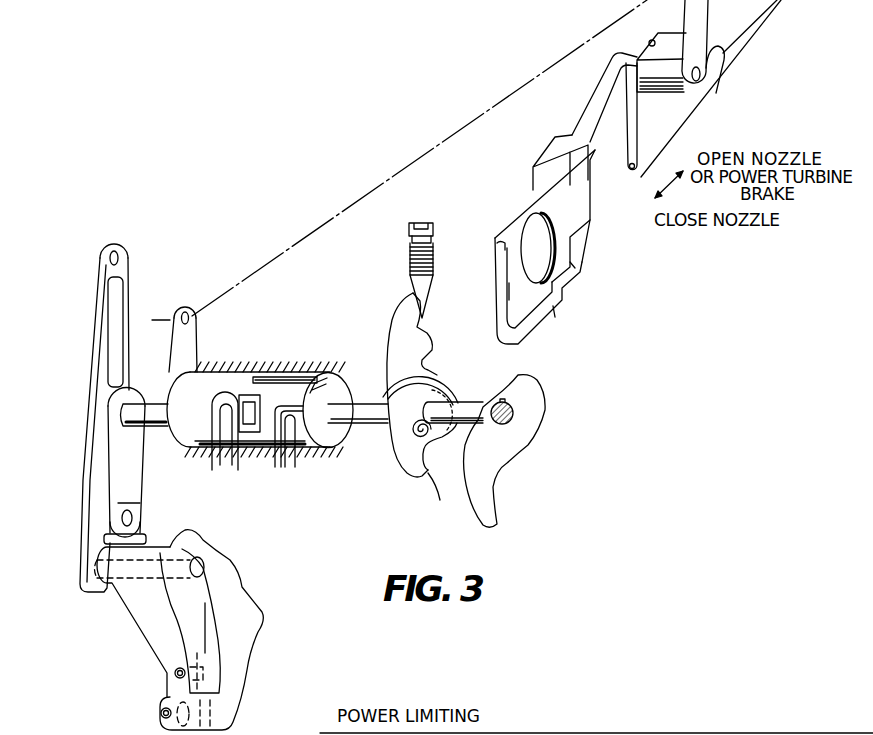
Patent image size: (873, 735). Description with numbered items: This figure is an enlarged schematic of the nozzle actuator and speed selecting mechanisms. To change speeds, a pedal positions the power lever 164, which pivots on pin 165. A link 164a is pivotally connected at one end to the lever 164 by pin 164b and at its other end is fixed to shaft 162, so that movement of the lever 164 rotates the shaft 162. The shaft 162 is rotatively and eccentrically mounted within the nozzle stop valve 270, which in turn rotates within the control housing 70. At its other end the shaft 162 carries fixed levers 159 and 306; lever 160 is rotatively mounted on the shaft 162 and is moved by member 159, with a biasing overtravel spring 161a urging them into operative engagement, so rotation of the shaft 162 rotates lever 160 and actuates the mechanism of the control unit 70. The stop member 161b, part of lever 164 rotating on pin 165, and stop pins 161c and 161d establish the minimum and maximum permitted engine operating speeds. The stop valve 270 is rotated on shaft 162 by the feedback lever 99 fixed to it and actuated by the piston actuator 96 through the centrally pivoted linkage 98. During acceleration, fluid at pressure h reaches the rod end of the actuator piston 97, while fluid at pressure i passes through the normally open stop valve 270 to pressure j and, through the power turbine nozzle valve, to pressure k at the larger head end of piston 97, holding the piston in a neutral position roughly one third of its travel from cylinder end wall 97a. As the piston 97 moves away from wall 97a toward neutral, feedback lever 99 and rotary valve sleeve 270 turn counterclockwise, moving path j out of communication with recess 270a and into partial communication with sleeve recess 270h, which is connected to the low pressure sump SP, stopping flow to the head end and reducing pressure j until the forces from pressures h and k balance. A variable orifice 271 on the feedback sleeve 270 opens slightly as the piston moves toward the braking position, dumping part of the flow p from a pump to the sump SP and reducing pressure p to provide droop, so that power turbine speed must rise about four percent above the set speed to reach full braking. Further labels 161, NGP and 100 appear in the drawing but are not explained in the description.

The power lever 164 is at (121, 260).
The link 164a is at (117, 465).
The pin 164b is at (118, 522).
The feedback lever 99 is at (190, 335).
The control housing 70 is at (224, 366).
The recess 270a is at (252, 396).
The sleeve recess 270h is at (282, 382).
The sump SP is at (314, 384).
The pressure j is at (224, 437).
The pressure i is at (226, 443).
The nozzle stop valve 270 is at (265, 440).
The pressure p is at (291, 448).
The variable orifice 271 is at (309, 445).
The shaft 162 is at (467, 408).
The adjusting screw 161 is at (425, 262).
The lever 160 is at (422, 330).
The biasing overtravel spring 161a is at (425, 437).
The lever 159 is at (438, 494).
The lever 306 is at (508, 464).
The actuator piston 97 is at (546, 265).
The cylinder end wall 97a is at (505, 243).
The pressure h is at (572, 266).
The pressure k is at (536, 307).
The piston actuator 96 is at (560, 135).
The centrally pivoted linkage 98 is at (660, 62).
The stop member 161b is at (150, 623).
The pin 165 is at (196, 577).
The stop pin 161d is at (174, 673).
The stop pin 161c is at (161, 713).
The gas generator speed NGP is at (318, 732).
The reference line 100 is at (320, 733).